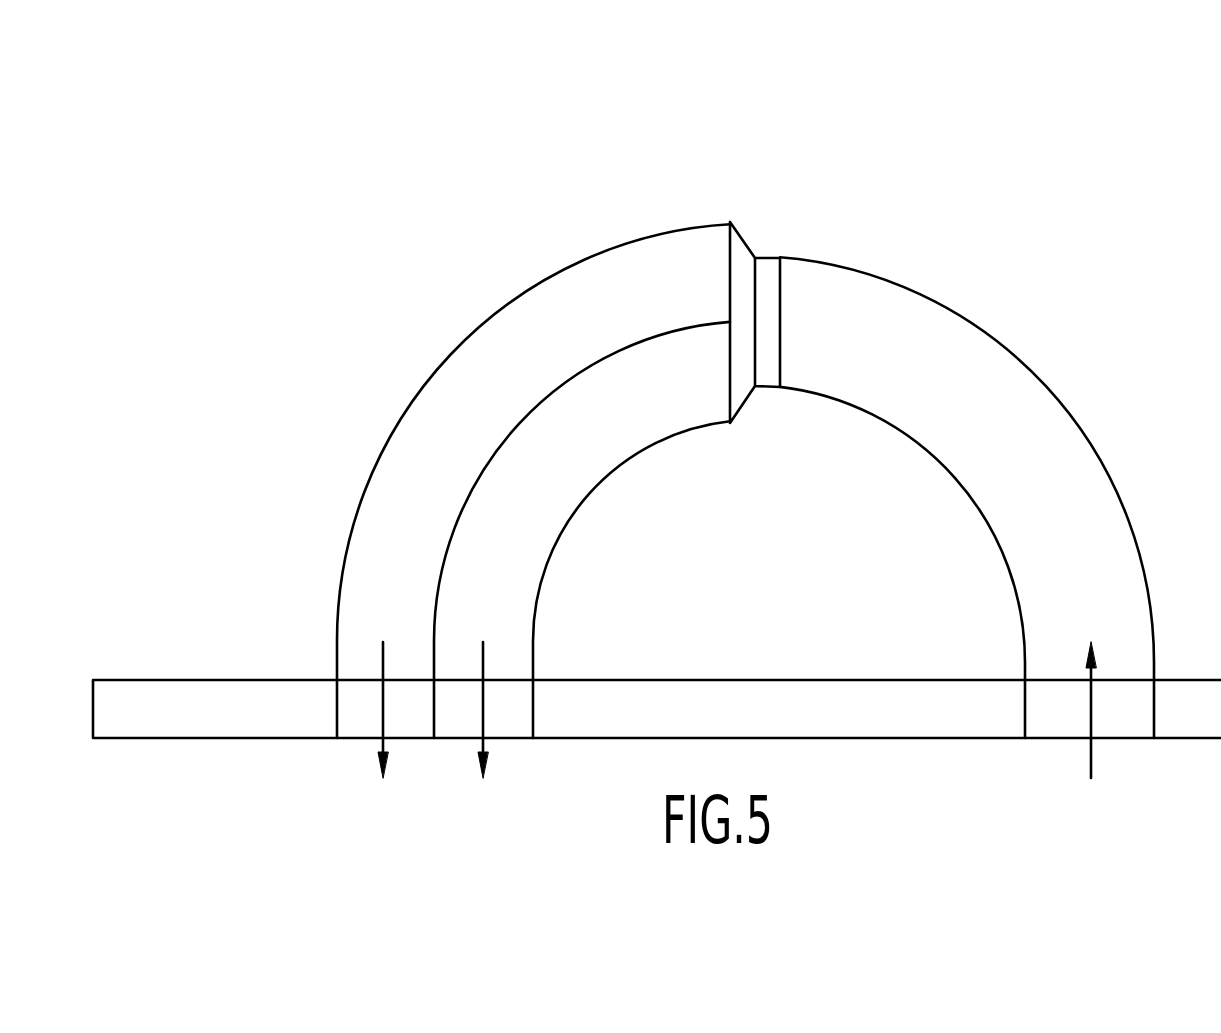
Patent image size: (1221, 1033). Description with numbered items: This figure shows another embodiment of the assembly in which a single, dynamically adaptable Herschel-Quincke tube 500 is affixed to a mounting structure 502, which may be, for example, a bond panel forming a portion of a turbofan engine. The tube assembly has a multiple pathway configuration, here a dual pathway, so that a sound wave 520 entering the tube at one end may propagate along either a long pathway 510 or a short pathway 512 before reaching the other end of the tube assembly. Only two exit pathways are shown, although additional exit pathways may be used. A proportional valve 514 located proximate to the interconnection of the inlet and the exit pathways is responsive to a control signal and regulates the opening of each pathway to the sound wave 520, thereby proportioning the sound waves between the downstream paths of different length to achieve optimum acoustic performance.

The Herschel-Quincke tube 500 is at (691, 465).
The mounting structure 502 is at (240, 668).
The long pathway 510 is at (563, 283).
The short pathway 512 is at (632, 445).
The proportional valve 514 is at (872, 180).
The sound wave 520 is at (774, 749).